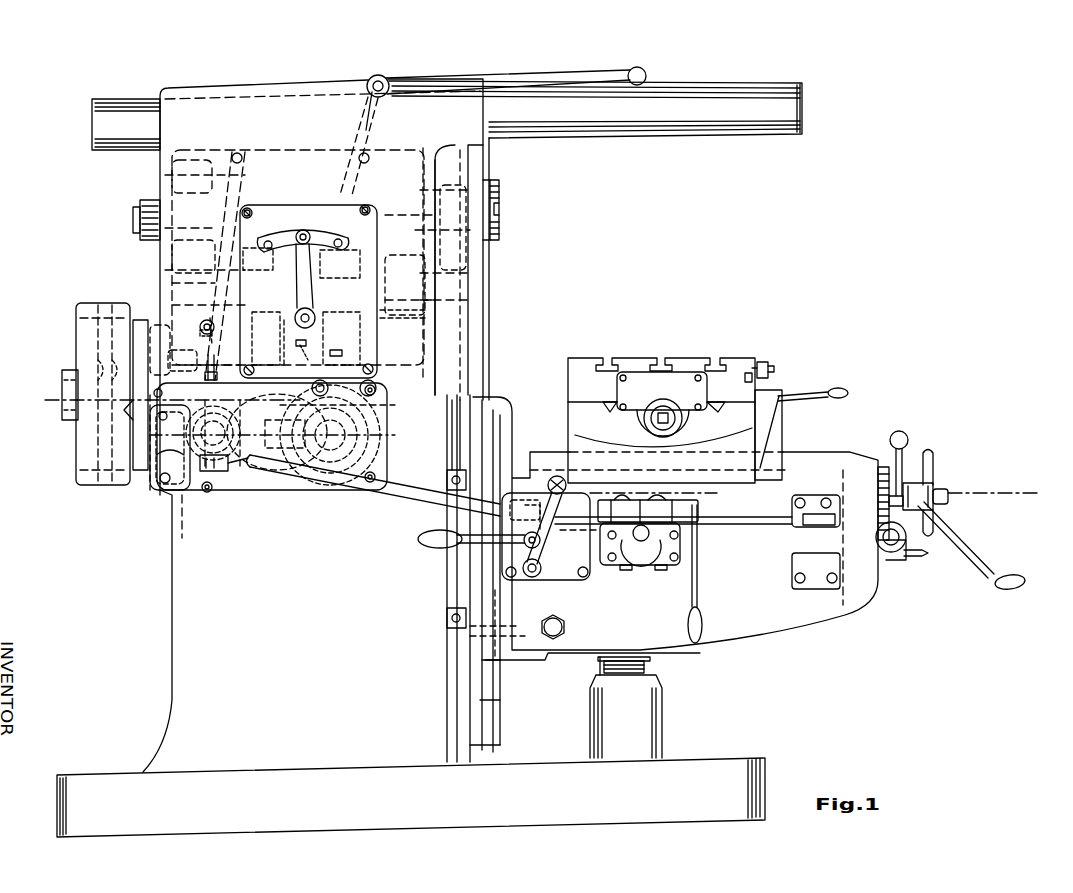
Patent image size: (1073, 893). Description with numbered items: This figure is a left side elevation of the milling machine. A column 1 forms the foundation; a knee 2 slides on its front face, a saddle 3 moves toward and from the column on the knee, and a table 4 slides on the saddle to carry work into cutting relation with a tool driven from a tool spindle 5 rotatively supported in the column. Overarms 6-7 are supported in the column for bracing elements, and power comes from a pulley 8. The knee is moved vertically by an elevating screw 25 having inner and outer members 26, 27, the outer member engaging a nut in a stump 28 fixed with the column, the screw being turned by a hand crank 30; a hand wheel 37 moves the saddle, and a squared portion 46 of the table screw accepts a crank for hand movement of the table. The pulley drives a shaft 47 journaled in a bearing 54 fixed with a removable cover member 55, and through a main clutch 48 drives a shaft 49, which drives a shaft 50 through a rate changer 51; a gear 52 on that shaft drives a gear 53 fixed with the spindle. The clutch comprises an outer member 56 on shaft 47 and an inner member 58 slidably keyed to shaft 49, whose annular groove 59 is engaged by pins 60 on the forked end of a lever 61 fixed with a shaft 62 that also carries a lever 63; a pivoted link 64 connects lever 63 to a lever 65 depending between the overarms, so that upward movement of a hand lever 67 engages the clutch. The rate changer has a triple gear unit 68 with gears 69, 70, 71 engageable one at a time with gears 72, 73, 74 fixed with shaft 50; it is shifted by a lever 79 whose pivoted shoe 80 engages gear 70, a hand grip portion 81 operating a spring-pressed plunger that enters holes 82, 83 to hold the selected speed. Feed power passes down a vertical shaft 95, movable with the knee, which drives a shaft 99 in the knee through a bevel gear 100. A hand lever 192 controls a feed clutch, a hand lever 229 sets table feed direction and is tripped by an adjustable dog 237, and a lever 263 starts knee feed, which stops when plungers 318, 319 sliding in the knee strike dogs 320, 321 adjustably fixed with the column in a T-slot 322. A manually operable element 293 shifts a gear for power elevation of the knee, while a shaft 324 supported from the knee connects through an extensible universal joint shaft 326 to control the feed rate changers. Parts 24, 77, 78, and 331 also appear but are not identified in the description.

The column 1 is at (178, 540).
The knee 2 is at (758, 628).
The saddle 3 is at (51, 410).
The table 4 is at (740, 356).
The tool spindle 5 is at (499, 218).
The overarms 6-7 is at (712, 86).
The pulley 8 is at (96, 303).
The knee clamp lever 24 is at (703, 600).
The elevating screw 25 is at (598, 675).
The inner member 26 is at (655, 659).
The outer member 27 is at (648, 670).
The stump 28 is at (662, 718).
The hand crank 30 is at (963, 545).
The hand wheel 37 is at (930, 453).
The squared portion 46 is at (682, 422).
The shaft 47 is at (60, 405).
The main clutch 48 is at (160, 320).
The shaft 49 is at (410, 406).
The shaft 50 is at (478, 288).
The rate changer 51 is at (354, 326).
The gear 52 is at (385, 318).
The gear 53 is at (412, 172).
The bearing 54 is at (112, 370).
The cover member 55 is at (140, 320).
The outer clutch member 56 is at (170, 322).
The inner clutch member 58 is at (182, 360).
The annular groove 59 is at (208, 412).
The pins 60 is at (212, 358).
The lever 61 is at (205, 336).
The shaft 62 is at (208, 316).
The lever 63 is at (225, 250).
The pivoted link 64 is at (326, 150).
The lever 65 is at (380, 116).
The hand lever 67 is at (570, 80).
The triple gear unit 68 is at (298, 322).
The gear 69 is at (272, 342).
The gear 70 is at (326, 348).
The gear 71 is at (340, 363).
The gear 72 is at (262, 236).
The gear 73 is at (320, 252).
The gear 74 is at (368, 248).
The shift lever 77 is at (302, 230).
The screws 78 is at (246, 208).
The lever 79 is at (296, 350).
The pivoted shoe 80 is at (312, 388).
The hand grip portion 81 is at (300, 232).
The hole 82 is at (266, 240).
The hole 83 is at (338, 238).
The vertical shaft 95 is at (480, 573).
The shaft 99 is at (503, 655).
The bevel gear 100 is at (470, 636).
The hand lever 192 is at (890, 425).
The hand lever 229 is at (826, 388).
The adjustable dog 237 is at (768, 362).
The lever 263 is at (418, 541).
The manually operable element 293 is at (948, 492).
The plunger 318 is at (455, 522).
The plunger 319 is at (460, 558).
The dog 320 is at (446, 468).
The dog 321 is at (446, 613).
The T-slot 322 is at (445, 588).
The shaft 324 is at (730, 528).
The extensible universal joint shaft 326 is at (398, 498).
The handwheel housing 331 is at (852, 465).